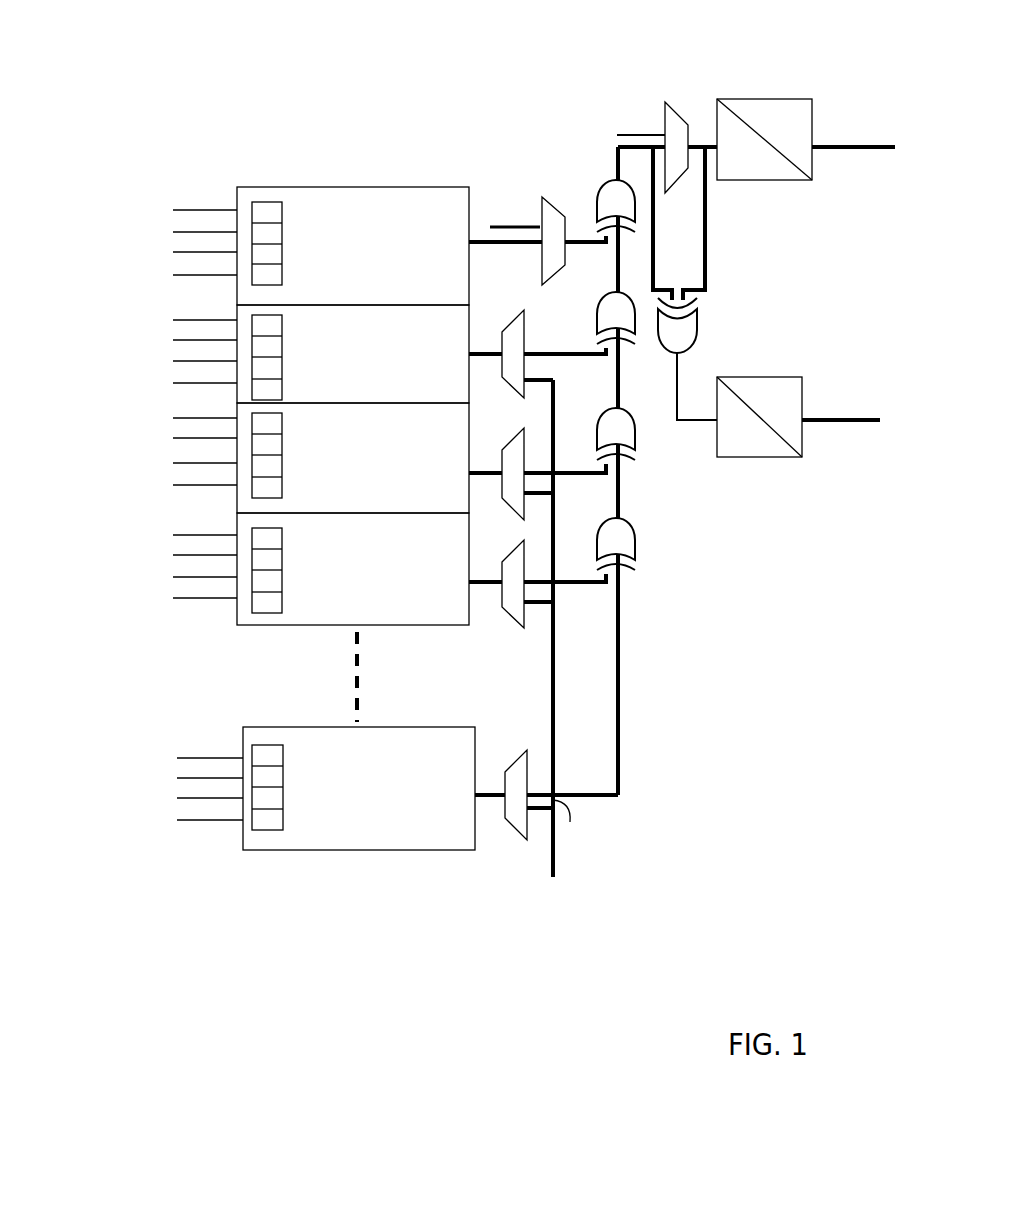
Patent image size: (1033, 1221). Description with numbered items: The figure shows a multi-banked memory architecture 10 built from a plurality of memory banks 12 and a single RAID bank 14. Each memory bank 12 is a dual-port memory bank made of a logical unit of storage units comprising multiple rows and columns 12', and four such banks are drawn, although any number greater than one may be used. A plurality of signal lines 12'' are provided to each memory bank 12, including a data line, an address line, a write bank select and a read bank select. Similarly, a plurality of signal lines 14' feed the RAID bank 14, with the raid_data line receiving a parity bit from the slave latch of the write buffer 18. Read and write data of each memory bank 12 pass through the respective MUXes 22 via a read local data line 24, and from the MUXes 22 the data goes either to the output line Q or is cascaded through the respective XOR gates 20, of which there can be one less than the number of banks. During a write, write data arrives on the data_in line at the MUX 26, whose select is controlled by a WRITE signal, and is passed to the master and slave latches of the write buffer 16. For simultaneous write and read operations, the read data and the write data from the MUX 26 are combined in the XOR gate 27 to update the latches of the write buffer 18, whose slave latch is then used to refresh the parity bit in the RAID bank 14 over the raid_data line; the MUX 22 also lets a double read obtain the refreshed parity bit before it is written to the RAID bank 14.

The multi-banked memory architecture 10 is at (266, 158).
The memory banks 12 is at (255, 577).
The rows and columns of storage units 12' is at (228, 770).
The signal lines 12'' is at (180, 744).
The RAID bank 14 is at (273, 224).
The signal lines 14' is at (164, 194).
The write buffer 16 is at (798, 102).
The write buffer 18 is at (787, 380).
The XOR gates 20 is at (607, 192).
The MUXes 22 is at (542, 205).
The read local data line 24 is at (490, 587).
The MUX 26 is at (668, 117).
The XOR gate 27 is at (695, 313).